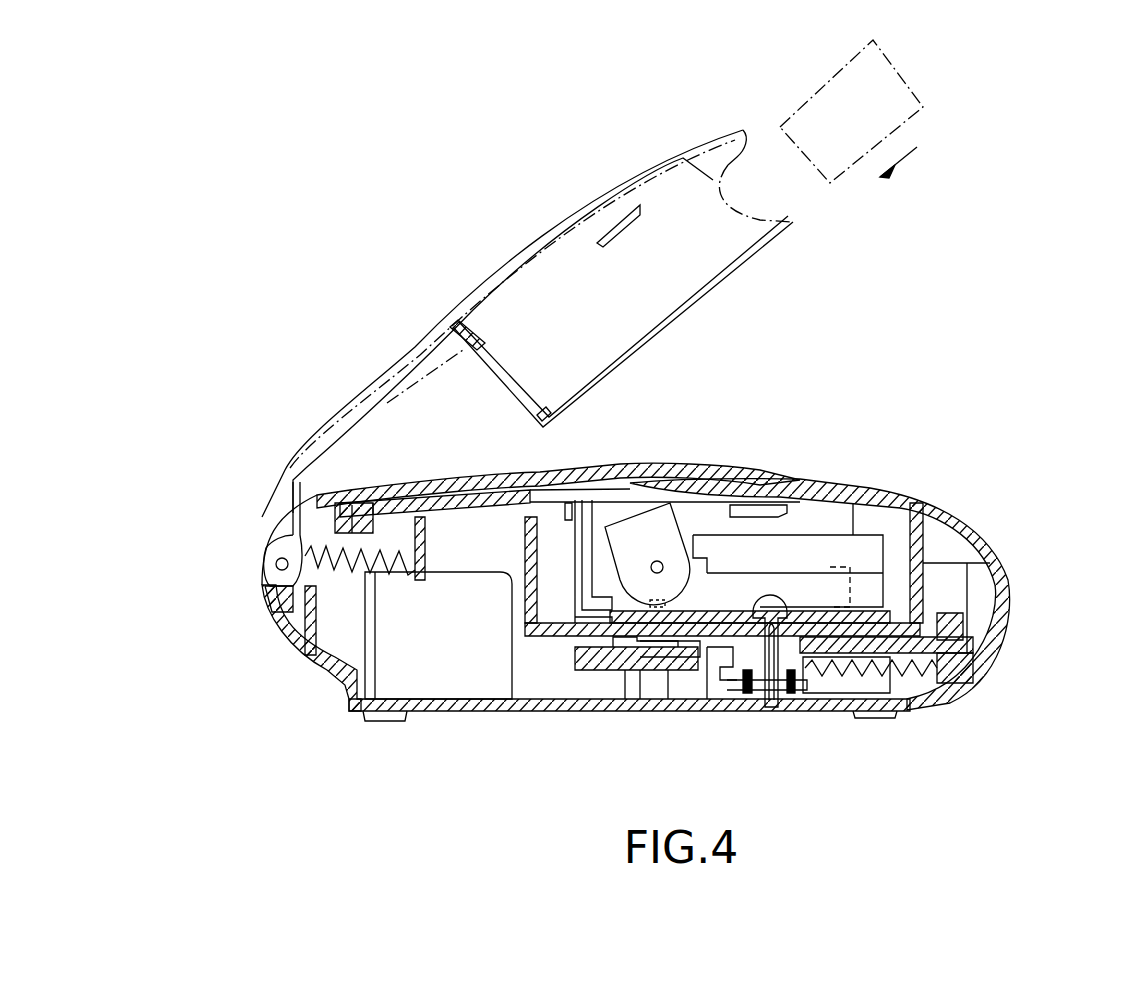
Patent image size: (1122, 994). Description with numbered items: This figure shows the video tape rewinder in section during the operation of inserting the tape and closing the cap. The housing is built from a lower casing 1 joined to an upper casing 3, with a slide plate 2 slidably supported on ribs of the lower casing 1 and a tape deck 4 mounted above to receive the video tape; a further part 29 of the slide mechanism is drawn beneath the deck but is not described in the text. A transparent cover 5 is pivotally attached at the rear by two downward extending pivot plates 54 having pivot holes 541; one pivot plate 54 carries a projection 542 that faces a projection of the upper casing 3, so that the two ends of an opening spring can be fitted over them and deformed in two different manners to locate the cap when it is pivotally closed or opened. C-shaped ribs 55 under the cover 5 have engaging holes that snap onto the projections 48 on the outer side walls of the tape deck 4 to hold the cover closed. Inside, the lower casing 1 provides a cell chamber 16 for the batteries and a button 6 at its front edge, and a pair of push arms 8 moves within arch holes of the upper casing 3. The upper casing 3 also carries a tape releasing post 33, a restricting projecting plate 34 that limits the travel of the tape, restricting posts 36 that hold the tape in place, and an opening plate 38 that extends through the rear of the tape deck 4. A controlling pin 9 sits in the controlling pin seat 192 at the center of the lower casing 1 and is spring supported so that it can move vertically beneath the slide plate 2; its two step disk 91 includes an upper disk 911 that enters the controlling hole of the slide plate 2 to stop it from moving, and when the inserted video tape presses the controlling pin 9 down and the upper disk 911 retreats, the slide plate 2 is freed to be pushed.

The lower casing 1 is at (430, 713).
The slide plate 2 is at (985, 652).
The upper casing 3 is at (920, 547).
The tape deck 4 is at (890, 613).
The transparent cover 5 is at (383, 488).
The button 6 is at (1012, 605).
The push arms 8 is at (633, 652).
The controlling pin 9 is at (778, 590).
The cell chamber 16 is at (422, 668).
The switch block 29 is at (590, 650).
The tape releasing post 33 is at (843, 580).
The restricting projecting plate 34 is at (893, 583).
The restricting posts 36 is at (628, 535).
The opening plate 38 is at (605, 573).
The projections 48 is at (740, 505).
The pivot plates 54 is at (263, 547).
The C-shaped ribs 55 is at (548, 485).
The two step disk 91 is at (810, 690).
The controlling pin seat 192 is at (722, 690).
The pivot holes 541 is at (276, 566).
The projection 542 is at (285, 633).
The upper disk 911 is at (745, 668).